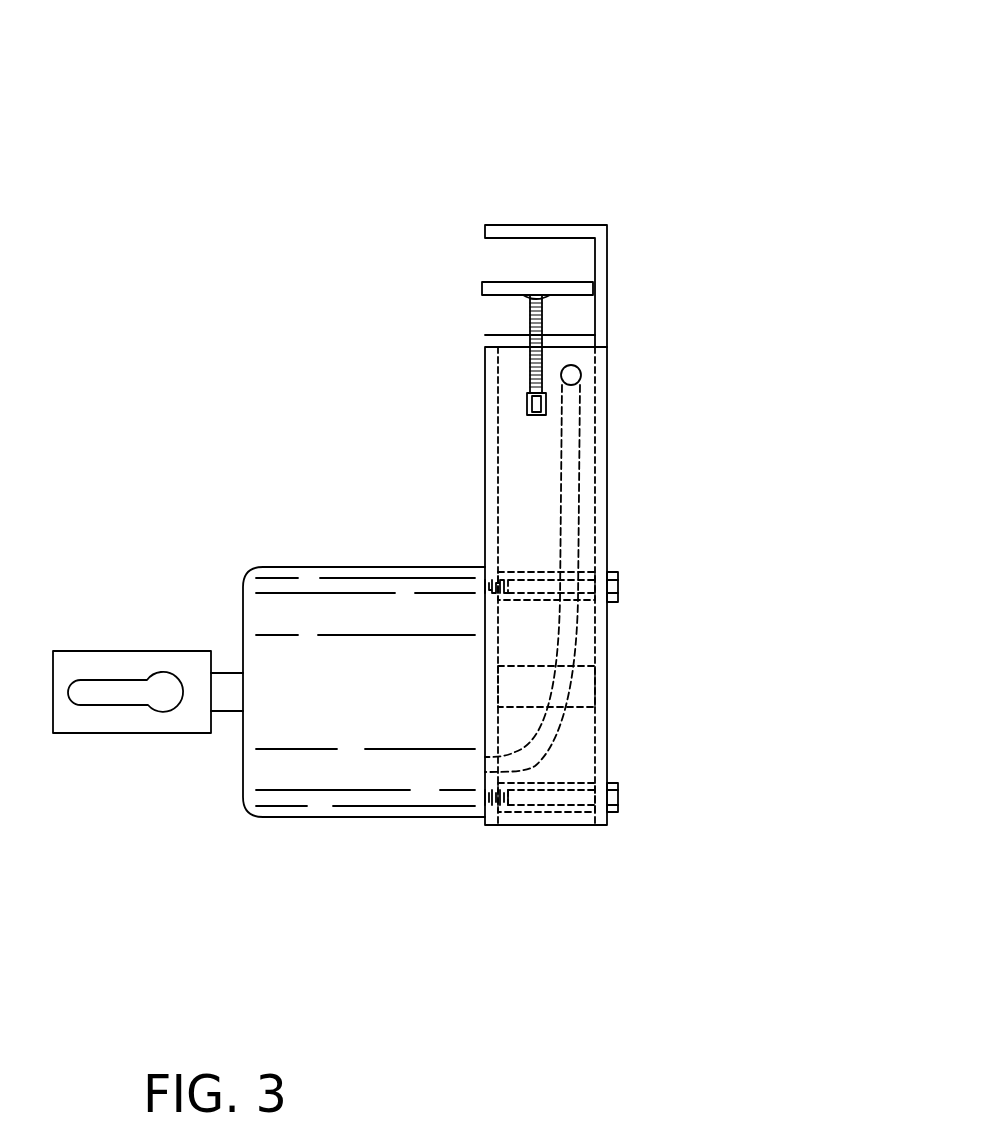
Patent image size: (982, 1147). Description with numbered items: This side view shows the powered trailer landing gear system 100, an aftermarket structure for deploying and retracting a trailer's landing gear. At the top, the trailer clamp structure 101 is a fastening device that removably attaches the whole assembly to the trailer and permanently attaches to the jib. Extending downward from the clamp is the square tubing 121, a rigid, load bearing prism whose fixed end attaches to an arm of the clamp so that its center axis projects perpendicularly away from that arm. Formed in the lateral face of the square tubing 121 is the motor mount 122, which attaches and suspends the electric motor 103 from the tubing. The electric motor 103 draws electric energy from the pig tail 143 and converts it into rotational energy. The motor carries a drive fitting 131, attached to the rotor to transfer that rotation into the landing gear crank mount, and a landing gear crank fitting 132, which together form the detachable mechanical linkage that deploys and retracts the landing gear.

The powered trailer landing gear system 100 is at (225, 94).
The trailer clamp structure 101 is at (578, 292).
The electric motor 103 is at (326, 605).
The square tubing 121 is at (540, 830).
The motor mount 122 is at (618, 587).
The drive fitting 131 is at (123, 668).
The landing gear crank fitting 132 is at (597, 666).
The pig tail 143 is at (578, 442).